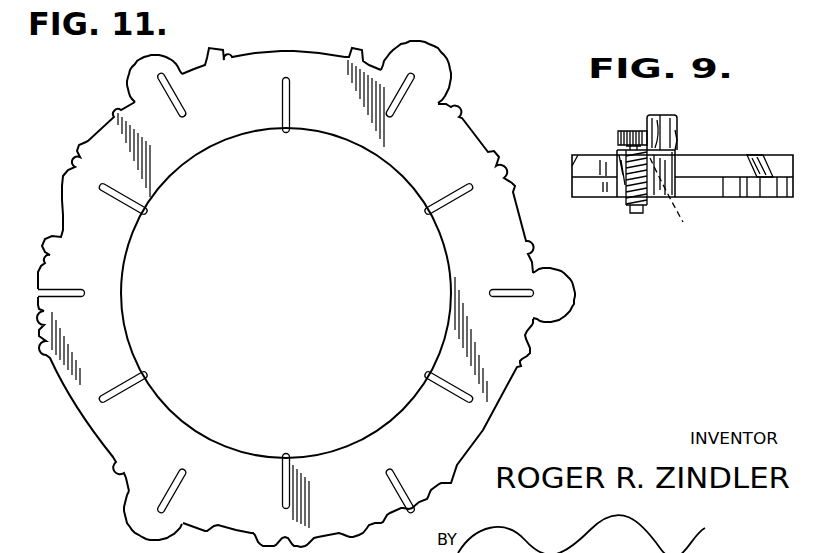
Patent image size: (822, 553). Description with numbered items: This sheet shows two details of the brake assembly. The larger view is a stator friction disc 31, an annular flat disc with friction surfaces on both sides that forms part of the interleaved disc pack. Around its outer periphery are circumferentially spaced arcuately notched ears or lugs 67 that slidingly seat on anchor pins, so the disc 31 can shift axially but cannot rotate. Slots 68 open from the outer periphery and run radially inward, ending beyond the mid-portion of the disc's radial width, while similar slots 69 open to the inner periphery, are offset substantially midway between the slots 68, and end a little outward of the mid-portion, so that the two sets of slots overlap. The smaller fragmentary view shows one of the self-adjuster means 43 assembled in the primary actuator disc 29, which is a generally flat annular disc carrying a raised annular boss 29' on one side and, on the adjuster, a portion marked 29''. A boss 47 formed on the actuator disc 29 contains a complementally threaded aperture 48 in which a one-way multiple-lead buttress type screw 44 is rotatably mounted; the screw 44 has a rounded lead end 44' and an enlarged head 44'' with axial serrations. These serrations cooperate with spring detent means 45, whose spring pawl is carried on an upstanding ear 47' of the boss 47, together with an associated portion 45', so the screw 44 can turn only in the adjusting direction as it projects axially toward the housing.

In FIG. 11, the stator friction disc 31 is at (287, 273).
In FIG. 11, the arcuately notched ear or lug 67 is at (180, 62).
In FIG. 11, the slot 68 is at (412, 516).
In FIG. 11, the slot 69 is at (286, 131).
In FIG. 9, the primary actuator disc 29 is at (682, 196).
In FIG. 9, the raised annular boss 29' is at (765, 147).
In FIG. 9, the rail lower portion 29'' is at (758, 208).
In FIG. 9, the self-adjuster means 43 is at (626, 126).
In FIG. 9, the multiple-lead buttress type screw 44 is at (613, 194).
In FIG. 9, the rounded lead end 44' is at (641, 222).
In FIG. 9, the enlarged head 44'' is at (593, 123).
In FIG. 9, the spring detent means 45 is at (647, 117).
In FIG. 9, the post portion 45' is at (670, 117).
In FIG. 9, the boss 47 is at (679, 157).
In FIG. 9, the upstanding ear 47' is at (697, 140).
In FIG. 9, the threaded aperture 48 is at (678, 198).